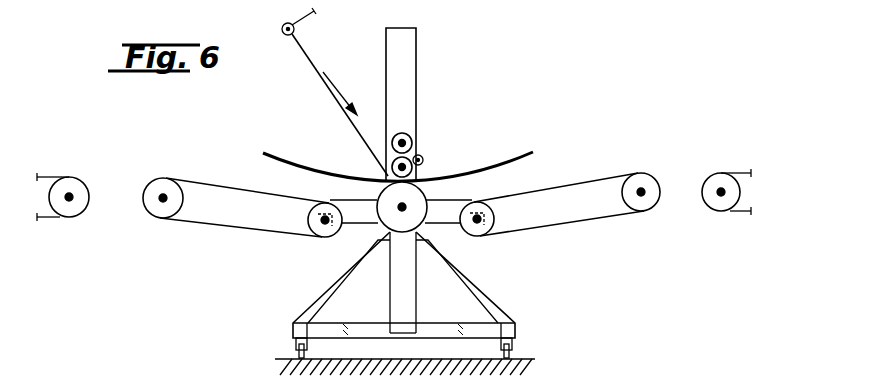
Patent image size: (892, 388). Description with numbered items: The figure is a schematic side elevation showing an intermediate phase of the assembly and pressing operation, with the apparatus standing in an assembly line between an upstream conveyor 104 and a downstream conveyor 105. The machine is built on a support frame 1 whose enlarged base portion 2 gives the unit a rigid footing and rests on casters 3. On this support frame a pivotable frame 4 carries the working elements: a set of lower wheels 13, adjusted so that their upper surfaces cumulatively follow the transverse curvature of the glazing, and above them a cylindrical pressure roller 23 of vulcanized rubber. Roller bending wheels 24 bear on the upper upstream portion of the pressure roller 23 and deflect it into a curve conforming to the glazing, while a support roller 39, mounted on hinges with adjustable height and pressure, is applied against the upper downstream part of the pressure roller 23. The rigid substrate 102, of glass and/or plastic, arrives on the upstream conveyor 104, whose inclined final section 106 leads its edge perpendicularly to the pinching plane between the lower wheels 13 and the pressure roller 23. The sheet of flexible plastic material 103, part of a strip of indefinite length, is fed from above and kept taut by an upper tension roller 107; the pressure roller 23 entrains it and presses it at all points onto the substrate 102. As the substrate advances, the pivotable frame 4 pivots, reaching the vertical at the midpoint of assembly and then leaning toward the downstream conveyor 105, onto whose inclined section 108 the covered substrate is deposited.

The support frame 1 is at (462, 203).
The base portion 2 is at (483, 294).
The casters 3 is at (513, 352).
The pivotable frame 4 is at (408, 87).
The lower wheels 13 is at (373, 196).
The pressure roller 23 is at (414, 172).
The roller bending wheels 24 is at (413, 142).
The support roller 39 is at (424, 160).
The rigid substrate 102 is at (316, 165).
The sheet of flexible plastic material 103 is at (314, 72).
The upstream conveyor 104 is at (47, 218).
The downstream conveyor 105 is at (741, 213).
The final section of the upstream conveyor 106 is at (228, 220).
The upper tension roller 107 is at (296, 29).
The inclined section of the downstream conveyor 108 is at (578, 218).